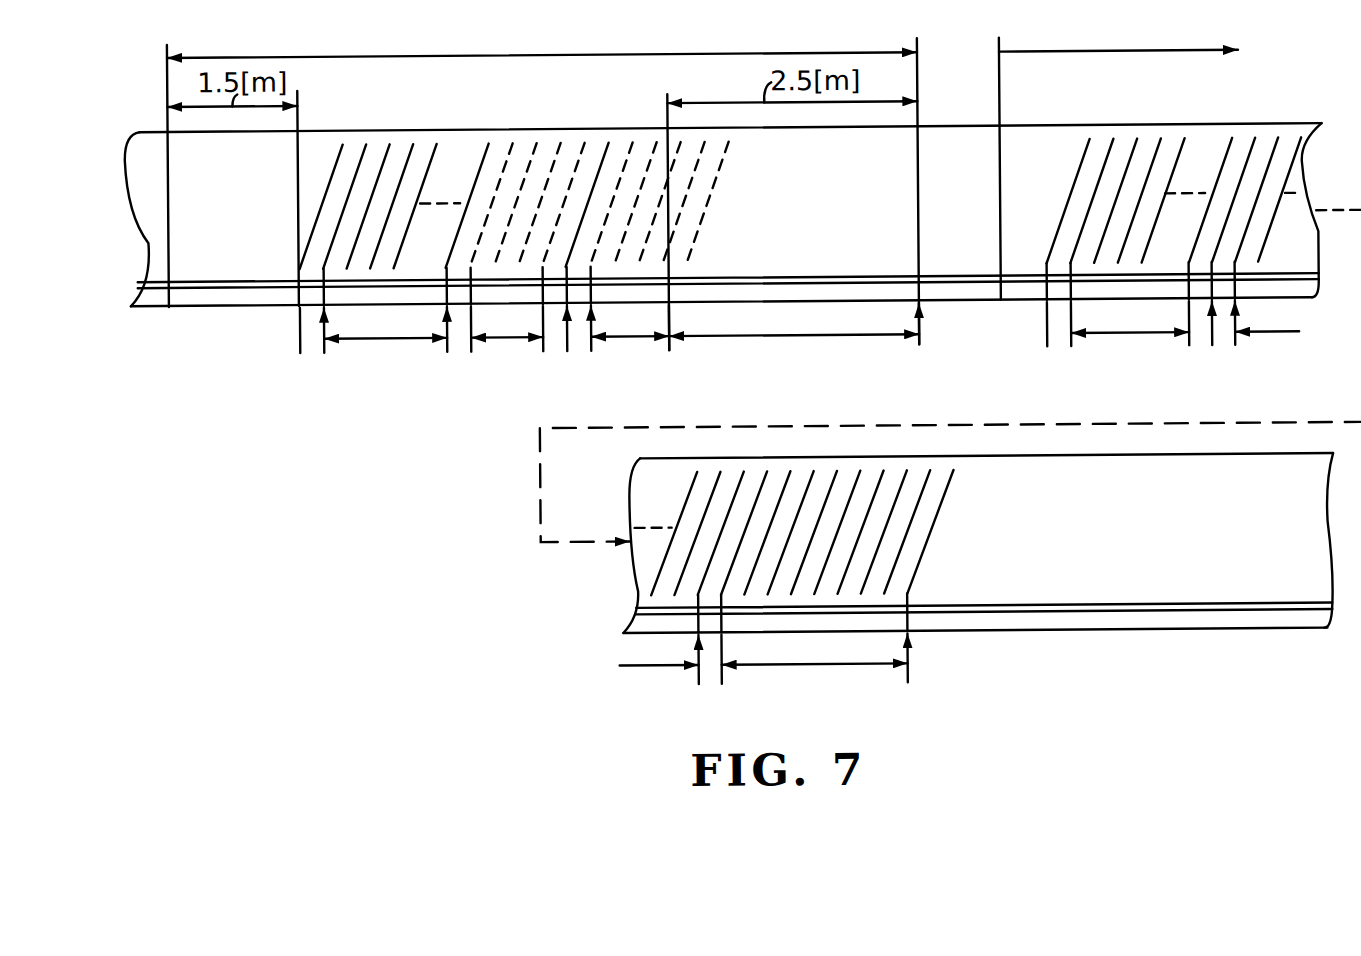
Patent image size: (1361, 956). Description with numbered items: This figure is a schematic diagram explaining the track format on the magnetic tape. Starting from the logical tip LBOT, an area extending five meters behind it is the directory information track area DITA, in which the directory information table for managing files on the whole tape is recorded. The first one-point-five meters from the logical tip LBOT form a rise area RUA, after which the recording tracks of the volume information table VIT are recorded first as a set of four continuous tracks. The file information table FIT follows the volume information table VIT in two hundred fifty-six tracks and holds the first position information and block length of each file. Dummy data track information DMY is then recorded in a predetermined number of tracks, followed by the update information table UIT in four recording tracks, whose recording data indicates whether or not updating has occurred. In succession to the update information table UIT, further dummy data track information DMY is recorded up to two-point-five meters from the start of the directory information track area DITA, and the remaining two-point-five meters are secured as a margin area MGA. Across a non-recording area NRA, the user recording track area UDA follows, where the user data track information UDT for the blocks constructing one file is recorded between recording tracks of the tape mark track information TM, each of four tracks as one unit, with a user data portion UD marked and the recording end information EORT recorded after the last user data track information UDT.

The logical tip LBOT is at (185, 163).
The directory information track area DITA is at (536, 57).
The user recording track area UDA is at (1130, 58).
The rise area RUA is at (237, 271).
The volume information table VIT is at (302, 329).
The file information table FIT is at (393, 341).
The dummy data track information DMY is at (642, 353).
The update information table UIT is at (579, 265).
The margin area MGA is at (806, 341).
The non-recording area NRA is at (964, 268).
The tape mark track information TM is at (1132, 322).
The user data track information UDT is at (1289, 353).
The user data UD is at (645, 670).
The end of recorded tape EORT is at (825, 670).